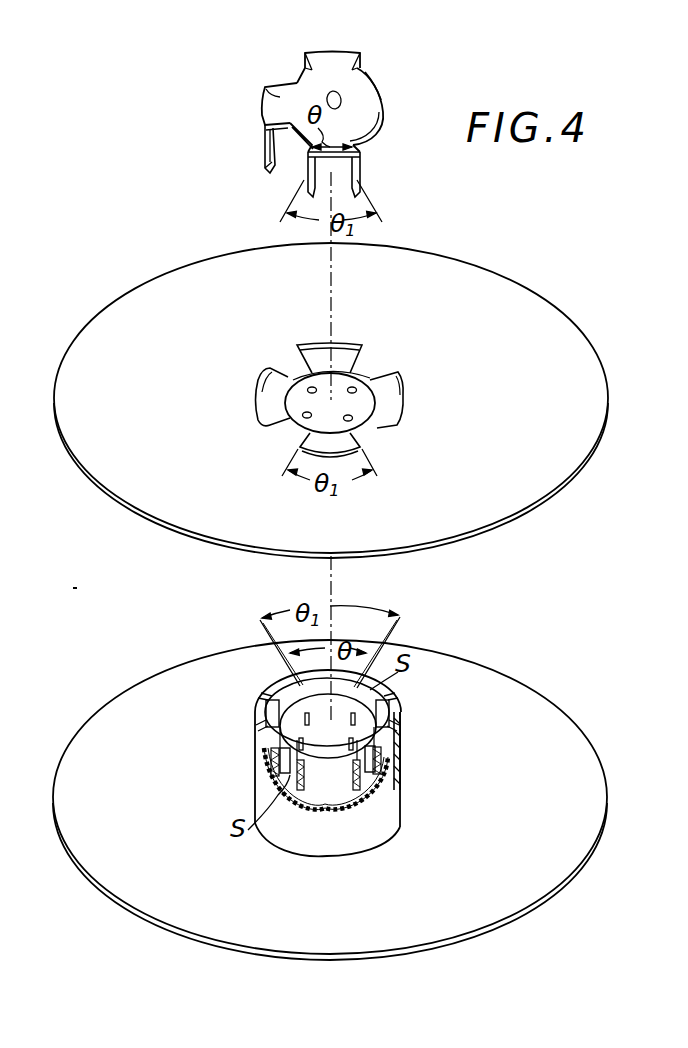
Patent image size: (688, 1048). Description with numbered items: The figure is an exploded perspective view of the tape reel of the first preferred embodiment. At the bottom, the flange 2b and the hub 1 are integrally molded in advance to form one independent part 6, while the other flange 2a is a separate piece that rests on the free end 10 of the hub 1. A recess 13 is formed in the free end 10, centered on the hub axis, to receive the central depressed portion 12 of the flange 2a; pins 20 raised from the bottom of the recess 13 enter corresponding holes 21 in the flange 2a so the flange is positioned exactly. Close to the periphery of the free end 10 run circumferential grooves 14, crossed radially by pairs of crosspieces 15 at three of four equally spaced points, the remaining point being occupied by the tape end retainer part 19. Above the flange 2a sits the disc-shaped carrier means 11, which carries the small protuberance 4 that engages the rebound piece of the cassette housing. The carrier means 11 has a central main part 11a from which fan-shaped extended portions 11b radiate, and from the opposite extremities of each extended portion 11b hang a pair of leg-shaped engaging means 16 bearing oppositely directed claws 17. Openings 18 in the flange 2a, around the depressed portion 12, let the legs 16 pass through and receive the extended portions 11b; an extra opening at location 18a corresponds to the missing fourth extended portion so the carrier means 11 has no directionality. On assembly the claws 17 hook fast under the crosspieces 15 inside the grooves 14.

The hub 1 is at (398, 695).
The flange 2a is at (533, 305).
The flange 2b is at (520, 704).
The small protuberance 4 is at (339, 104).
The independent part 6 is at (477, 627).
The free end 10 is at (275, 682).
The disc-shaped carrier means 11 is at (369, 62).
The main part 11a is at (363, 95).
The extended portions 11b is at (325, 58).
The central depressed portion 12 is at (360, 410).
The recess 13 is at (290, 735).
The grooves 14 is at (262, 723).
The crosspieces 15 is at (270, 705).
The leg-shaped engaging means 16 is at (300, 172).
The claws 17 is at (362, 182).
The openings 18 is at (312, 355).
The extra opening location 18a is at (395, 415).
The retainer part 19 is at (398, 735).
The pins 20 is at (375, 757).
The holes 21 is at (355, 388).